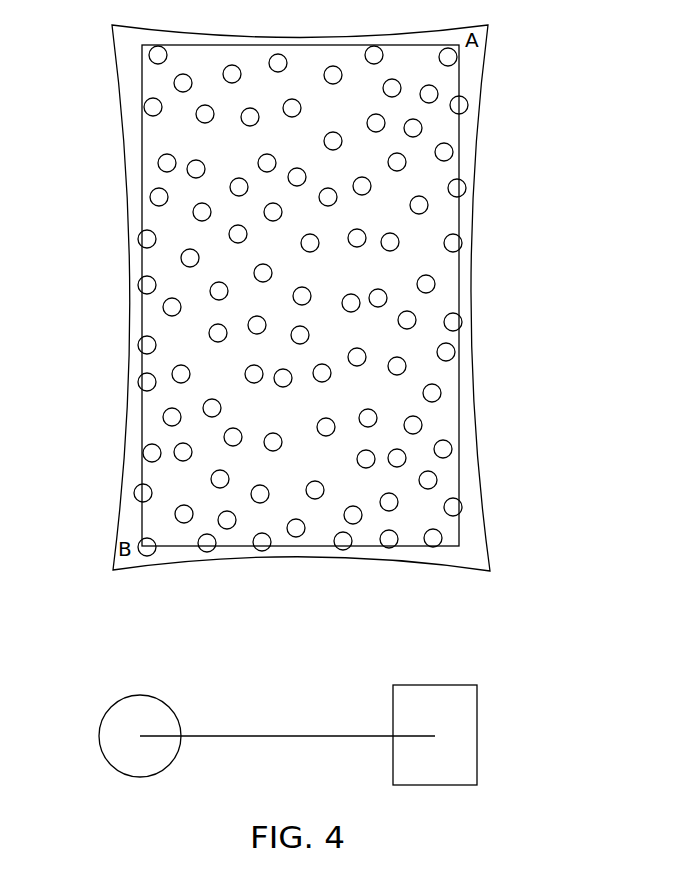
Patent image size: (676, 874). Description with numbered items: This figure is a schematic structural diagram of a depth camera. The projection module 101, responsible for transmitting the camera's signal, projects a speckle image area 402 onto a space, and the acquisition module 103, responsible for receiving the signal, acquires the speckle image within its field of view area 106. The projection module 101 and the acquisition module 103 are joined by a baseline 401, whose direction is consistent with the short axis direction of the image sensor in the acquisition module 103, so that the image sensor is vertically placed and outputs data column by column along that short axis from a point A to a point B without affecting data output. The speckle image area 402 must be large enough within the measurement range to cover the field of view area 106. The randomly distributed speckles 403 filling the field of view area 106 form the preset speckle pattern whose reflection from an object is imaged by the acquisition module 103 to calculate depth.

The projection module 101 is at (150, 695).
The acquisition module 103 is at (433, 684).
The field of view area 106 is at (140, 326).
The baseline 401 is at (257, 736).
The speckle image area 402 is at (471, 277).
The micro-structure dots 403 is at (444, 439).